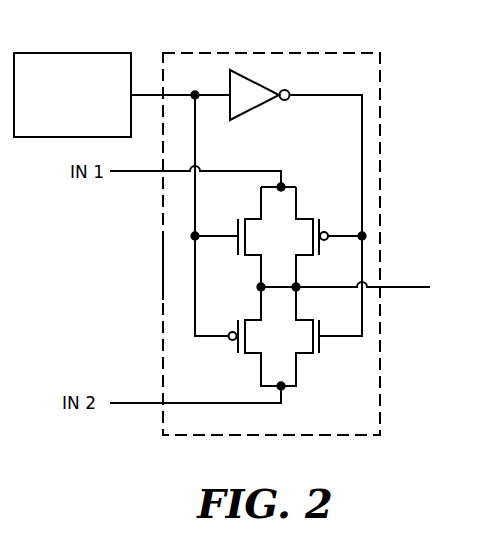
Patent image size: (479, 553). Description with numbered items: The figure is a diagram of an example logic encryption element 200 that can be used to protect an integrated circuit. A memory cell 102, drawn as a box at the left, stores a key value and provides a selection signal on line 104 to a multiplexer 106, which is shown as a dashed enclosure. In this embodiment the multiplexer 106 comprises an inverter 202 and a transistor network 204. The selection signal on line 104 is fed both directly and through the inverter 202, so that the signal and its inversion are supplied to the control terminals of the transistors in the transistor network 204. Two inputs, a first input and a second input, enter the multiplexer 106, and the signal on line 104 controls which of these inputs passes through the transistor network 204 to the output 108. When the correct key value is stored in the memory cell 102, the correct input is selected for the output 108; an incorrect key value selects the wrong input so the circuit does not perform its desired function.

The memory cell 102 is at (59, 131).
The line 104 is at (151, 94).
The multiplexer 106 is at (163, 268).
The output 108 is at (406, 287).
The logic encryption element 200 is at (236, 467).
The inverter 202 is at (262, 78).
The transistor network 204 is at (326, 196).